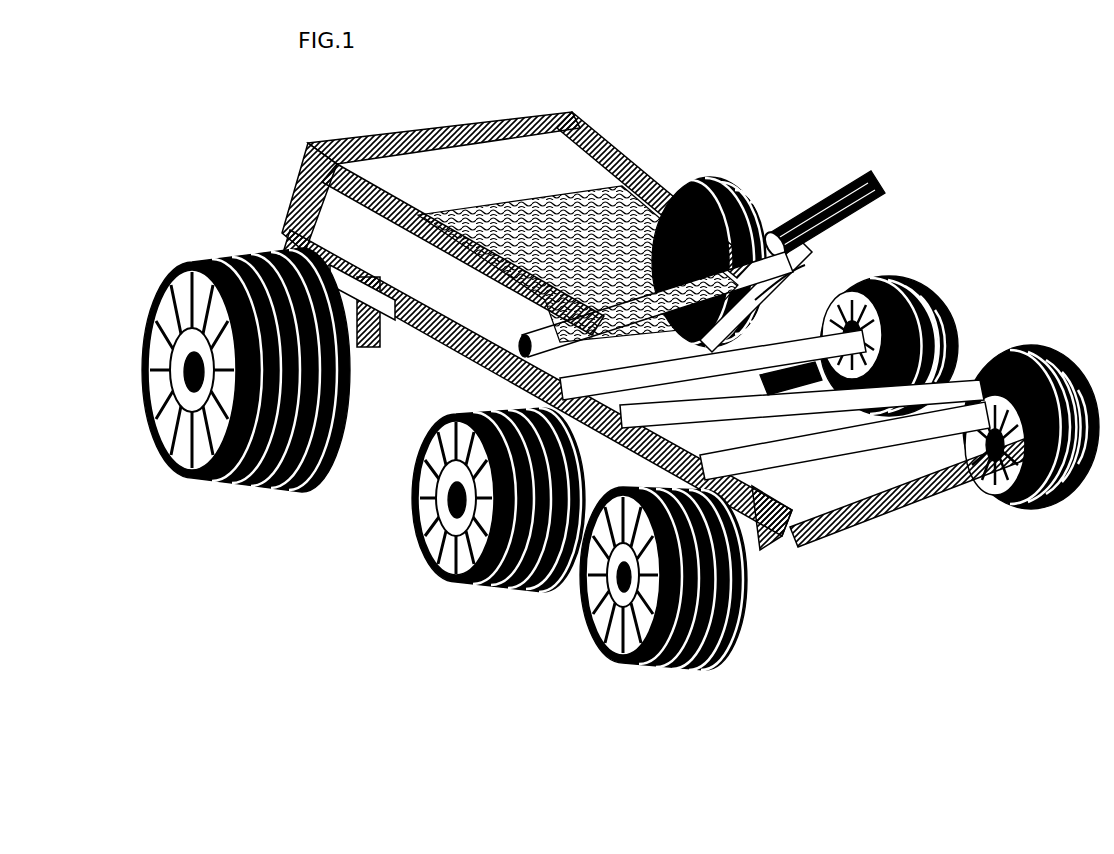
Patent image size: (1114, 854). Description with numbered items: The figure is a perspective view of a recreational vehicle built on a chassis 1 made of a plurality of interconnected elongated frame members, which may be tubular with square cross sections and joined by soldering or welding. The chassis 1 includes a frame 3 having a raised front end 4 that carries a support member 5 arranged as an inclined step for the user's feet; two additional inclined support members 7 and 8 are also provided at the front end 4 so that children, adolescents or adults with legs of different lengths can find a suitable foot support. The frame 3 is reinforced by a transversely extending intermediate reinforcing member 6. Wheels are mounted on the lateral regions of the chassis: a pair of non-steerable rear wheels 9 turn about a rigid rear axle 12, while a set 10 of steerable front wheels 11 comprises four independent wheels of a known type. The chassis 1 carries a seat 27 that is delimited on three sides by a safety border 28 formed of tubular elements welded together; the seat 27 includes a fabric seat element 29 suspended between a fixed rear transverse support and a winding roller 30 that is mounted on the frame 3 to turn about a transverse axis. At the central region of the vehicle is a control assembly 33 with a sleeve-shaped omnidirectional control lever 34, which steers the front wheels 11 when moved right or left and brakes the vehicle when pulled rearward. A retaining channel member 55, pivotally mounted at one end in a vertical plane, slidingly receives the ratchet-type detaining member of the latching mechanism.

The chassis 1 is at (422, 394).
The frame 3 is at (790, 310).
The raised front end 4 is at (920, 512).
The support member 5 is at (950, 487).
The intermediate reinforcing member 6 is at (820, 300).
The support member 7 is at (820, 482).
The support member 8 is at (965, 342).
The rear wheels 9 is at (206, 492).
The set of steerable front wheels 10 is at (560, 594).
The front wheels 11 is at (462, 592).
The rear axle 12 is at (400, 340).
The seat 27 is at (458, 200).
The safety border 28 is at (608, 118).
The fabric seat element 29 is at (635, 168).
The winding roller 30 is at (508, 385).
The control assembly 33 is at (855, 162).
The control lever 34 is at (890, 190).
The retaining channel member 55 is at (790, 382).